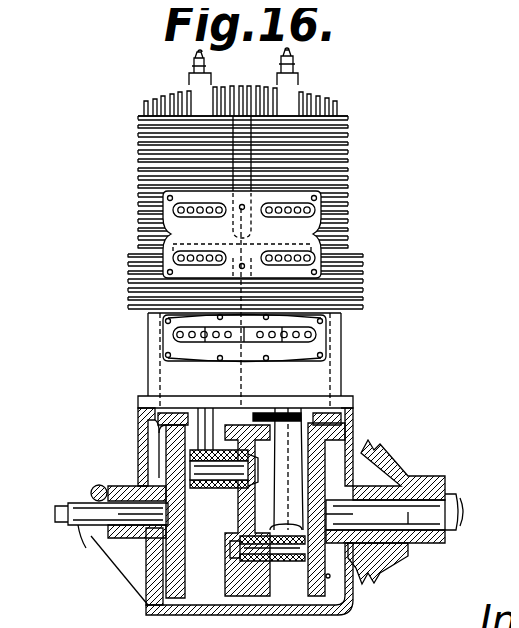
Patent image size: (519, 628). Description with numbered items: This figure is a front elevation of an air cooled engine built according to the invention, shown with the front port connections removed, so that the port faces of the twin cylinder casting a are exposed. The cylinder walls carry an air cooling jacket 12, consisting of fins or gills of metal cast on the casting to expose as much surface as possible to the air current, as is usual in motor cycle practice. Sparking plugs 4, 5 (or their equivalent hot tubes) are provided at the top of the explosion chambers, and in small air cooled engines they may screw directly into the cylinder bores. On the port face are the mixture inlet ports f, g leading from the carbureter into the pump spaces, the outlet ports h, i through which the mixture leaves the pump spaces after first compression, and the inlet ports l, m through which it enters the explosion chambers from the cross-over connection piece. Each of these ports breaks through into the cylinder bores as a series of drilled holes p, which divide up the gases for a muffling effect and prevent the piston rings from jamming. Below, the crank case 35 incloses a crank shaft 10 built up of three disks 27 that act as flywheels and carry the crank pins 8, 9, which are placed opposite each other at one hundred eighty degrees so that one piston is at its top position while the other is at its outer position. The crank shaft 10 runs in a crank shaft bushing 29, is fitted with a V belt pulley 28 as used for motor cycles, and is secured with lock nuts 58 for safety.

The sparking plug 4 is at (183, 72).
The sparking plug 5 is at (282, 70).
The air cooling jacket 12 is at (340, 130).
The inlet port l is at (172, 205).
The inlet port m is at (302, 208).
The outlet port i is at (318, 242).
The outlet port h is at (166, 256).
The holes p is at (200, 204).
The mixture inlet port f is at (172, 329).
The mixture inlet port g is at (305, 330).
The twin cylinder casting a is at (333, 362).
The disks 27 is at (160, 432).
The V belt pulley 28 is at (370, 455).
The lock nuts 58 is at (447, 492).
The crank pin 8 is at (203, 468).
The crank shaft bushing 29 is at (75, 518).
The crank case 35 is at (197, 596).
The crank pin 9 is at (270, 545).
The crank shaft 10 is at (375, 548).